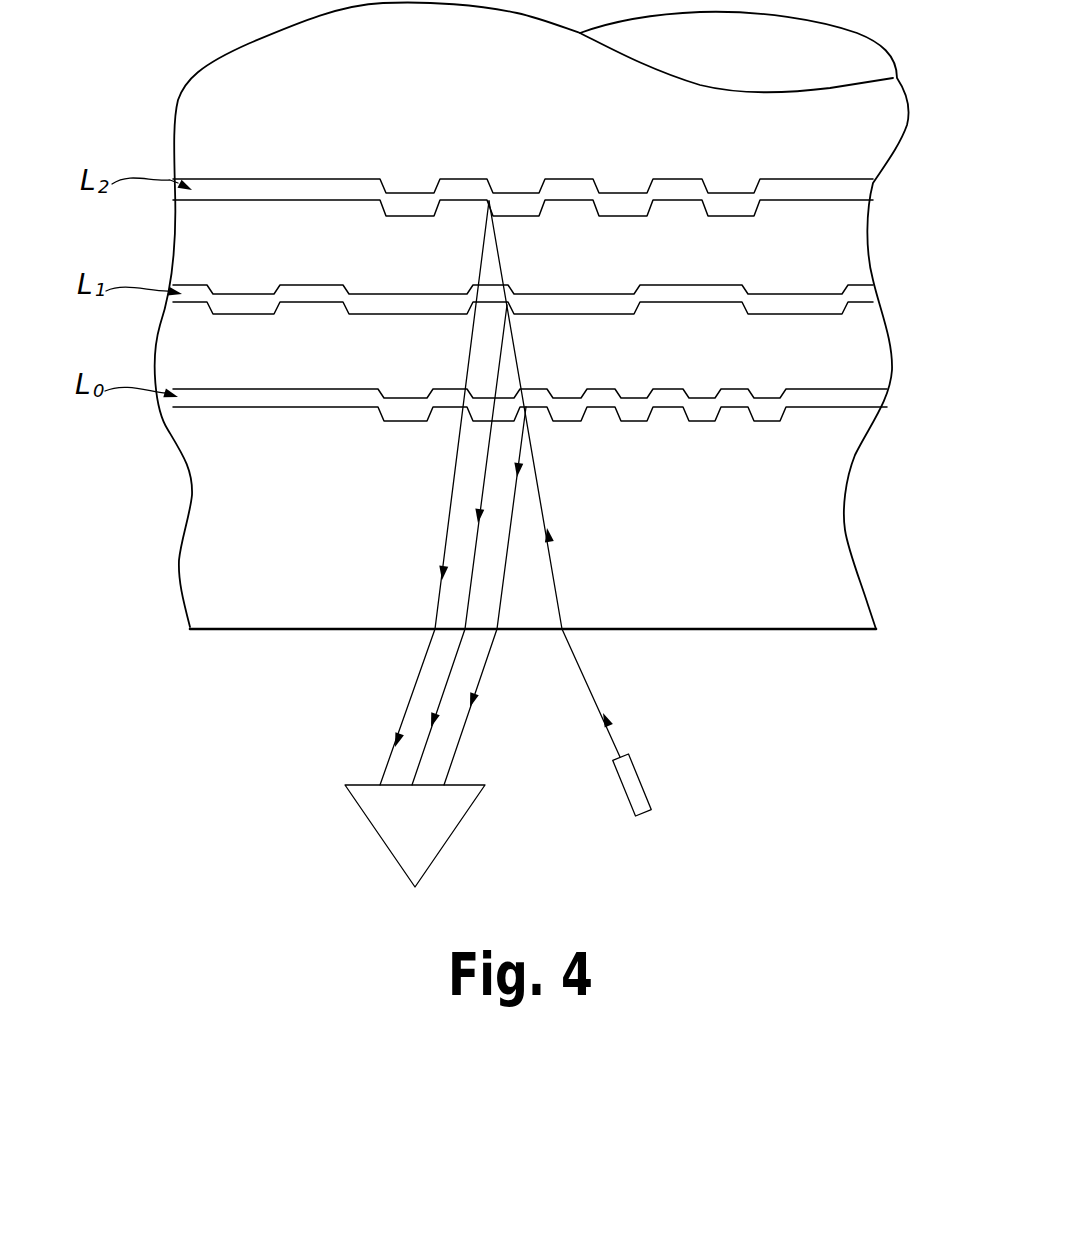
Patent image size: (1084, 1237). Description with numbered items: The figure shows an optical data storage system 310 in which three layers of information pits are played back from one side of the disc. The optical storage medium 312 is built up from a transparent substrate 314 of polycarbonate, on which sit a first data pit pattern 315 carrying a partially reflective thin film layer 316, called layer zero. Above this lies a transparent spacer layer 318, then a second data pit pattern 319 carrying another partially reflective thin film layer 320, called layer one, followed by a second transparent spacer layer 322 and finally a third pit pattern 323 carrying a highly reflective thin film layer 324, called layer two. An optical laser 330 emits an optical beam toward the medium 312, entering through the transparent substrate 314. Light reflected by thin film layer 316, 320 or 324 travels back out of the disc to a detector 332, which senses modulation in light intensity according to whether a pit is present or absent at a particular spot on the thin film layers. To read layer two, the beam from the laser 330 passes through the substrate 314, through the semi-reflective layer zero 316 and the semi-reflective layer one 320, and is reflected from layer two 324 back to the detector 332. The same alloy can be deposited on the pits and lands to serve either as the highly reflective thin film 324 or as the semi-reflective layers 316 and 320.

The optical data storage system 310 is at (523, 650).
The optical storage medium 312 is at (166, 490).
The transparent substrate 314 is at (815, 533).
The first data pit pattern 315 is at (235, 408).
The partially reflective thin film layer 316 is at (837, 390).
The transparent spacer layer 318 is at (847, 338).
The second data pit pattern 319 is at (238, 315).
The partially reflective thin film layer 320 is at (697, 293).
The second transparent spacer layer 322 is at (820, 242).
The third pit pattern 323 is at (237, 201).
The highly reflective thin film layer 324 is at (790, 193).
The optical laser 330 is at (641, 775).
The detector 332 is at (457, 830).